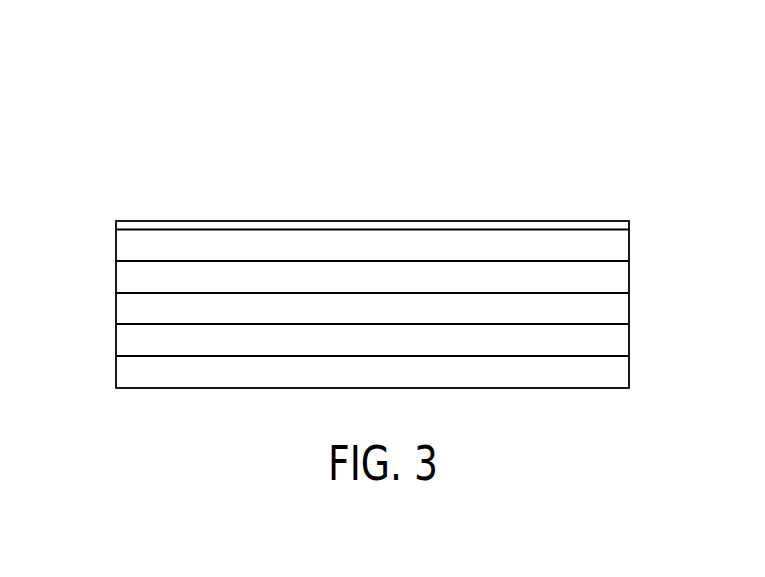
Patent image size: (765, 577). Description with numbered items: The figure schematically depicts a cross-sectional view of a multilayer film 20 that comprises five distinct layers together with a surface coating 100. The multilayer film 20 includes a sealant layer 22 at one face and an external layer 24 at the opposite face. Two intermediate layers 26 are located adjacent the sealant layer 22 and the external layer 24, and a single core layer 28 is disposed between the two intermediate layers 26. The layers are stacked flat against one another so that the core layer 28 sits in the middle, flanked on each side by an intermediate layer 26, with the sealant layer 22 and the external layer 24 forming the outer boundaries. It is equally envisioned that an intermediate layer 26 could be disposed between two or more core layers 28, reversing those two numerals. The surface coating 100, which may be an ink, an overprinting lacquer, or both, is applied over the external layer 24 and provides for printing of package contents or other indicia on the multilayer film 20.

The multilayer film 20 is at (170, 125).
The surface coating 100 is at (579, 226).
The external layer 24 is at (125, 243).
The intermediate layer 26 is at (620, 278).
The core layer 28 is at (125, 310).
The sealant layer 22 is at (125, 370).